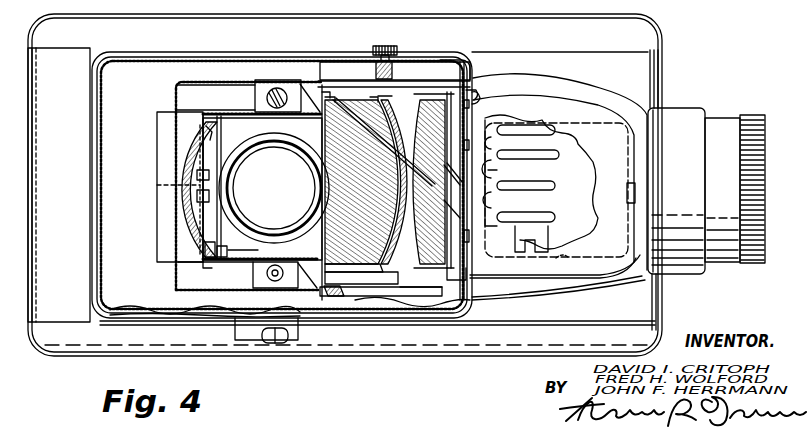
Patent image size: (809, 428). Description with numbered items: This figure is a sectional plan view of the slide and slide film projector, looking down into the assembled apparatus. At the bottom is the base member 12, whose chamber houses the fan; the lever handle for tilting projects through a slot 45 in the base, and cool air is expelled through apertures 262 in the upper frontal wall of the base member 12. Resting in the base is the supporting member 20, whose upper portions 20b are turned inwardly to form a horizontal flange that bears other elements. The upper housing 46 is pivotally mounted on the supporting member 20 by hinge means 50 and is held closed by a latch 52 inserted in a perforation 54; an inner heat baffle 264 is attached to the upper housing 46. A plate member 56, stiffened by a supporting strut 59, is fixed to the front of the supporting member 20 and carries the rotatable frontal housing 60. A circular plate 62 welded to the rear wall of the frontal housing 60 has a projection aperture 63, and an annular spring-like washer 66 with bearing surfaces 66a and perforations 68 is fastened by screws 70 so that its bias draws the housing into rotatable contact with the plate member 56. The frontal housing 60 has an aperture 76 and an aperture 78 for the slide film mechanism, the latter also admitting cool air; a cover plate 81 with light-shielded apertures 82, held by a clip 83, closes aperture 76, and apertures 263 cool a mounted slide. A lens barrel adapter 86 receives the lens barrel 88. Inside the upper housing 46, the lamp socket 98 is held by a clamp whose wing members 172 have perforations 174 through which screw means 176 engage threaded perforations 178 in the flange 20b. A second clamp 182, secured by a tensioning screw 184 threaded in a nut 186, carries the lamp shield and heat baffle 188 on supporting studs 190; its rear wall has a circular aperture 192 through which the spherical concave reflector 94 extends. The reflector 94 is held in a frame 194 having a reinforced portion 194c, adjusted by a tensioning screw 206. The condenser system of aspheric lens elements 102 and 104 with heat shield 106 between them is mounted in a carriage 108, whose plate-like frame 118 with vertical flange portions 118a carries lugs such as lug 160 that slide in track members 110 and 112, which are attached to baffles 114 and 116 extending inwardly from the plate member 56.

The base member 12 is at (412, 350).
The supporting member 20 is at (452, 322).
The upper portion of supporting member 20b is at (143, 193).
The slot 45 is at (262, 338).
The upper housing 46 is at (158, 322).
The hinge means 50 is at (90, 228).
The latch 52 is at (390, 47).
The perforation 54 is at (396, 88).
The plate member 56 is at (477, 97).
The supporting strut 59 is at (398, 142).
The frontal housing 60 is at (582, 104).
The circular plate 62 is at (459, 108).
The projection aperture 63 is at (472, 237).
The annular spring-like washer 66 is at (398, 181).
The bearing surfaces 66a is at (461, 96).
The perforations 68 is at (458, 148).
The screws 70 is at (454, 266).
The aperture 76 is at (586, 234).
The aperture 78 is at (562, 260).
The cover plate 81 is at (614, 151).
The light-shielded apertures 82 is at (515, 238).
The clip 83 is at (627, 195).
The lens barrel adapter 86 is at (682, 171).
The lens barrel 88 is at (730, 171).
The spherical concave reflector 94 is at (249, 189).
The socket 98 is at (241, 158).
The aspheric lens element 102 is at (370, 191).
The aspheric lens element 104 is at (438, 196).
The heat shield 106 is at (371, 262).
The carriage 108 is at (338, 296).
The track member 110 is at (362, 90).
The track member 112 is at (410, 296).
The baffle 114 is at (440, 88).
The baffle 116 is at (357, 296).
The plate-like frame 118 is at (378, 131).
The vertical flange portions 118a is at (410, 118).
The lug 160 is at (368, 275).
The wing members 172 is at (255, 100).
The perforation 174 is at (265, 275).
The screw means 176 is at (268, 88).
The threaded perforations 178 is at (282, 278).
The second clamp 182 is at (234, 223).
The tensioning screw 184 is at (192, 218).
The nut 186 is at (185, 160).
The lamp shield and heat baffle 188 is at (205, 115).
The supporting studs 190 is at (250, 251).
The circular aperture 192 is at (212, 135).
The circularly apertured frame 194 is at (221, 125).
The reinforced portion 194c is at (206, 275).
The tensioning screw 206 is at (228, 253).
The apertures 262 is at (546, 181).
The apertures 263 is at (497, 207).
The inner heat baffle 264 is at (184, 82).